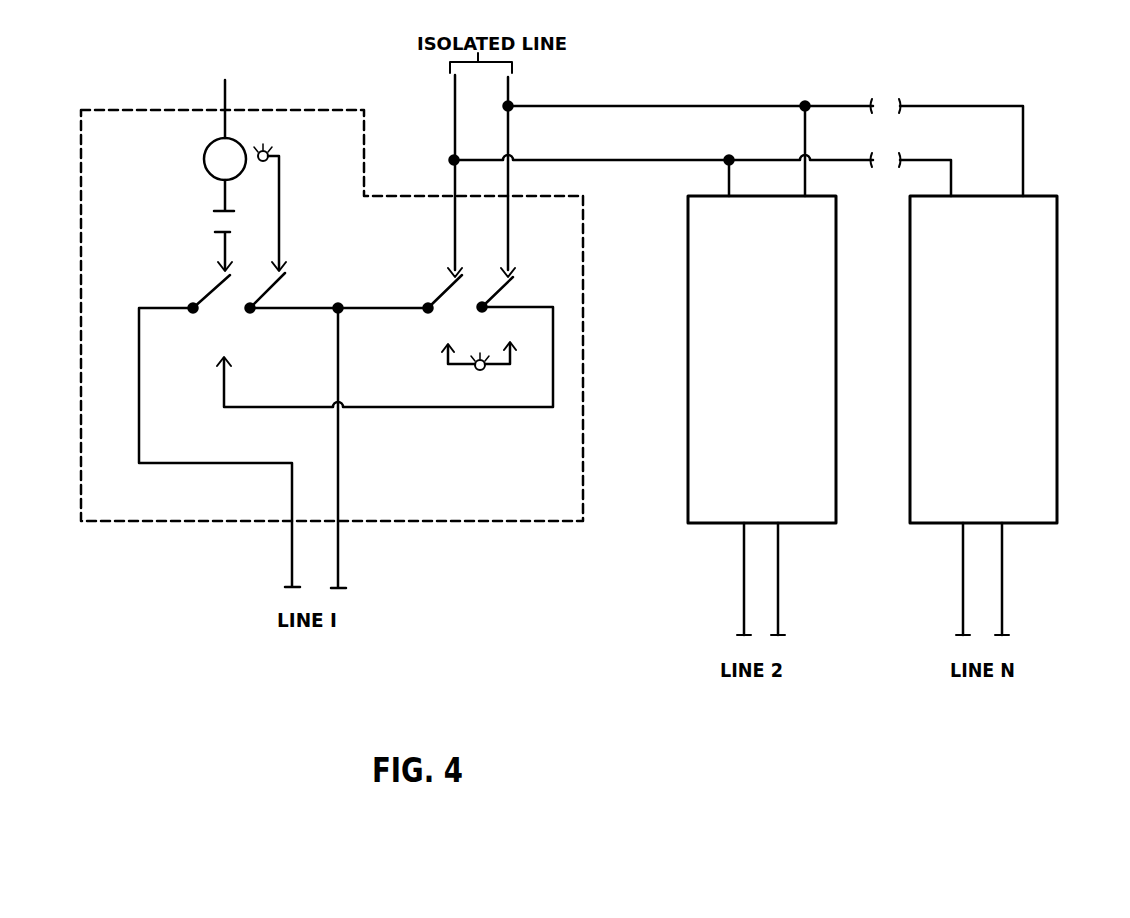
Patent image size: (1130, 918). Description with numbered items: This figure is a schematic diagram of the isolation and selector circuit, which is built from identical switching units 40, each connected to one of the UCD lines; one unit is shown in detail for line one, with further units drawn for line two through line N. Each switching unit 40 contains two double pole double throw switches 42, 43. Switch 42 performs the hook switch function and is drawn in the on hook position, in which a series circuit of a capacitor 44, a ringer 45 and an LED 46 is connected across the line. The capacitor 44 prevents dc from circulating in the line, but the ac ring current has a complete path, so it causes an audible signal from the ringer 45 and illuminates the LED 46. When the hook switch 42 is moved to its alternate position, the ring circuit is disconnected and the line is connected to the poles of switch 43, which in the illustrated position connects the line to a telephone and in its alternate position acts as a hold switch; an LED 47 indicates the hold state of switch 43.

The switching unit 40 is at (440, 521).
The hook switch 42 is at (193, 305).
The hold switch 43 is at (428, 305).
The capacitor 44 is at (229, 233).
The ringer 45 is at (225, 117).
The LED 46 is at (268, 152).
The LED 47 is at (486, 371).